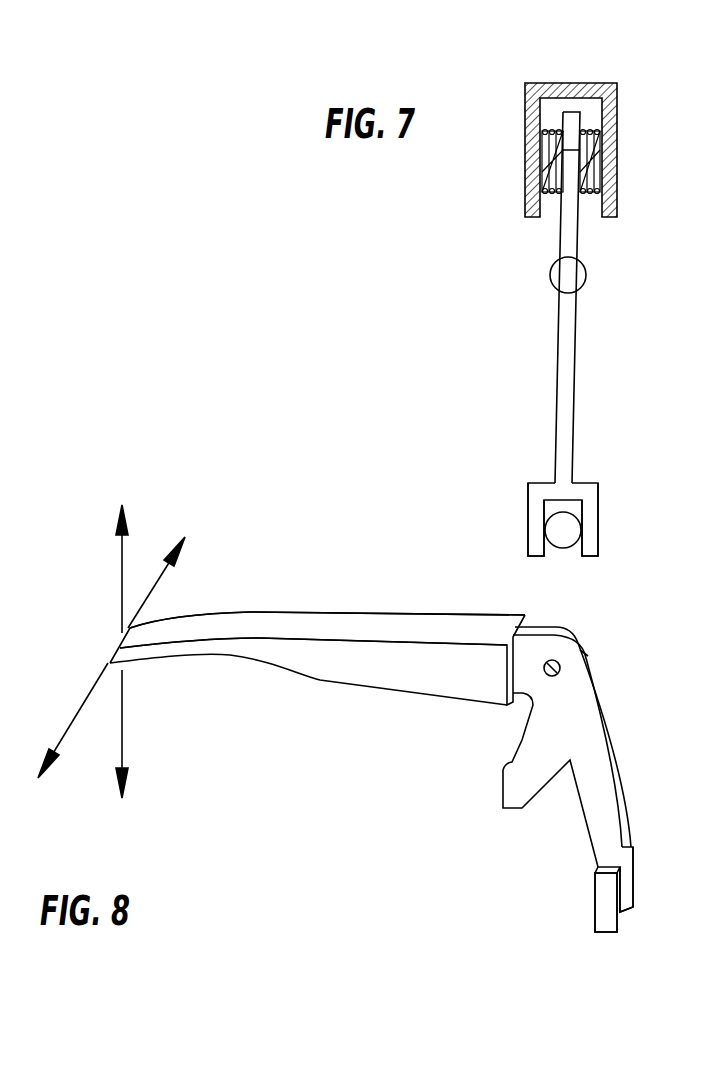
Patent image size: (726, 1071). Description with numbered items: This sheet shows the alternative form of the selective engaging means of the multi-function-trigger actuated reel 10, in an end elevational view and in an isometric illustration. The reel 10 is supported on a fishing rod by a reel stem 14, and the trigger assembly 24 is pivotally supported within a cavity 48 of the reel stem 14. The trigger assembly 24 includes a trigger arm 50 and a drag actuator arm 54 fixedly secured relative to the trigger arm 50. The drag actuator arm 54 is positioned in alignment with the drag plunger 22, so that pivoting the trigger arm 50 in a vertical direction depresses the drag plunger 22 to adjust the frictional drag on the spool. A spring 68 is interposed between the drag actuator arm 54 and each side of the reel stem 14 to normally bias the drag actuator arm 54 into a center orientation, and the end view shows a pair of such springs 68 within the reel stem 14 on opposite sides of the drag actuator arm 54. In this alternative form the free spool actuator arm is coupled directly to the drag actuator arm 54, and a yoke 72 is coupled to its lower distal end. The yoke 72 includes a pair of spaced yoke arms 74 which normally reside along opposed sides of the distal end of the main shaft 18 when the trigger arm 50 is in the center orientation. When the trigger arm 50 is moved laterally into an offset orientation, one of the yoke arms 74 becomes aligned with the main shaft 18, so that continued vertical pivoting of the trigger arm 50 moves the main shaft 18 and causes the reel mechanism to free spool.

In FIG. 7, the multi-function-trigger actuated reel 10 is at (0, 213).
In FIG. 7, the reel stem 14 is at (530, 93).
In FIG. 7, the main shaft 18 is at (561, 548).
In FIG. 7, the drag plunger 22 is at (550, 277).
In FIG. 8, the trigger assembly 24 is at (256, 613).
In FIG. 7, the cavity 48 is at (590, 113).
In FIG. 8, the trigger arm 50 is at (333, 623).
In FIG. 7, the drag actuator arm 54 is at (567, 235).
In FIG. 8, the drag actuator arm 54 is at (515, 787).
In FIG. 7, the spring 68 is at (546, 162).
In FIG. 7, the yoke 72 is at (600, 489).
In FIG. 8, the yoke 72 is at (596, 884).
In FIG. 7, the yoke arms 74 is at (537, 522).
In FIG. 8, the yoke arms 74 is at (600, 912).